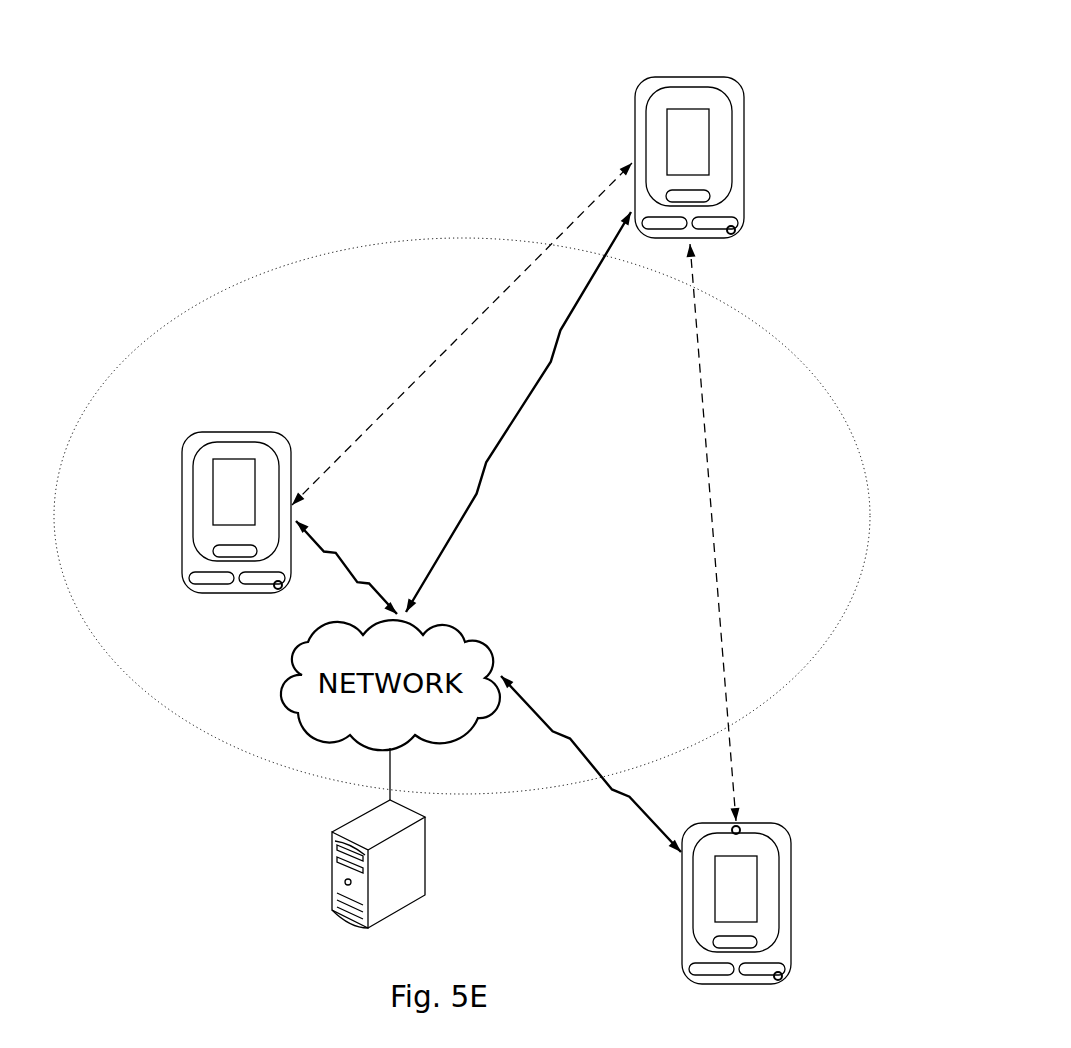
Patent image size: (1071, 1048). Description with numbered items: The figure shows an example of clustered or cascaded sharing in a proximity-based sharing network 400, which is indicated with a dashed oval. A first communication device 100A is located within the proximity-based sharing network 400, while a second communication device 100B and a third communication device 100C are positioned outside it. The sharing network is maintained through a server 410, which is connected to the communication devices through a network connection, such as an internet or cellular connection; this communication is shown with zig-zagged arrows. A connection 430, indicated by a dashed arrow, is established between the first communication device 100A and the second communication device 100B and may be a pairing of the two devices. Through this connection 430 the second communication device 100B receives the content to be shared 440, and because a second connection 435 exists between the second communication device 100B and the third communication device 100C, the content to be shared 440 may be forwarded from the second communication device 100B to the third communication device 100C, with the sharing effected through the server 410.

The first communication device 100A is at (237, 431).
The second communication device 100B is at (721, 82).
The third communication device 100C is at (776, 828).
The proximity-based sharing network 400 is at (112, 656).
The server 410 is at (333, 832).
The connection 430 is at (328, 470).
The second connection 435 is at (716, 542).
The content to be shared 440 is at (709, 125).